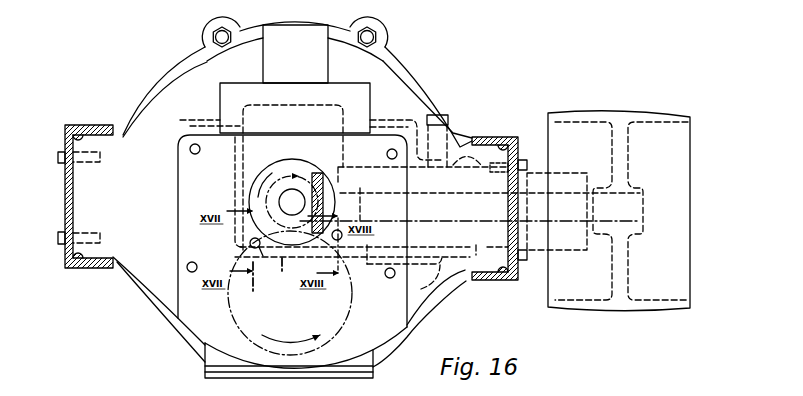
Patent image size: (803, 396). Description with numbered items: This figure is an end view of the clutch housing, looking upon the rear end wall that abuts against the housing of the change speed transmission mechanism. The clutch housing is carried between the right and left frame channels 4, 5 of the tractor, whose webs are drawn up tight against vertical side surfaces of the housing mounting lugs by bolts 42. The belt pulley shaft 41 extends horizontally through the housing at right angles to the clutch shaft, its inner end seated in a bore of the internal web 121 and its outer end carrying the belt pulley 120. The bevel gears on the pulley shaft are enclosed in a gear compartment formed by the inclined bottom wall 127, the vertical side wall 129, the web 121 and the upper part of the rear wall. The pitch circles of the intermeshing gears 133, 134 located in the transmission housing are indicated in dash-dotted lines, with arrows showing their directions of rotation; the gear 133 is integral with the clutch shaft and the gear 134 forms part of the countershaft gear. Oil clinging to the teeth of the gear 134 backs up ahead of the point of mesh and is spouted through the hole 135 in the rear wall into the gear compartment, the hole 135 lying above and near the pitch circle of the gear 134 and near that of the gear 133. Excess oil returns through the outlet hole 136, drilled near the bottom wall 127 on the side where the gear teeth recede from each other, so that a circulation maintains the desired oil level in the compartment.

The right frame channel 4 is at (493, 281).
The left frame channel 5 is at (65, 254).
The belt pulley shaft 41 is at (421, 221).
The bolts 42 is at (58, 157).
The belt pulley 120 is at (648, 113).
The internal web 121 is at (340, 152).
The inclined bottom wall 127 is at (270, 275).
The vertical side wall 129 is at (236, 190).
The gear 133 is at (270, 173).
The gear 134 is at (350, 314).
The hole 135 is at (338, 241).
The outlet hole 136 is at (250, 246).